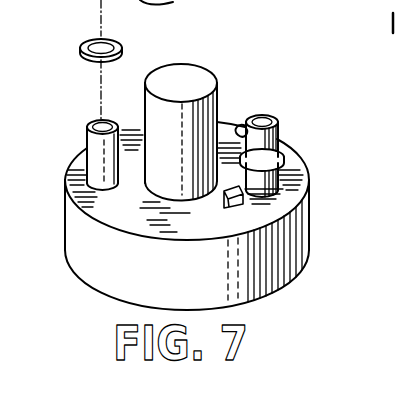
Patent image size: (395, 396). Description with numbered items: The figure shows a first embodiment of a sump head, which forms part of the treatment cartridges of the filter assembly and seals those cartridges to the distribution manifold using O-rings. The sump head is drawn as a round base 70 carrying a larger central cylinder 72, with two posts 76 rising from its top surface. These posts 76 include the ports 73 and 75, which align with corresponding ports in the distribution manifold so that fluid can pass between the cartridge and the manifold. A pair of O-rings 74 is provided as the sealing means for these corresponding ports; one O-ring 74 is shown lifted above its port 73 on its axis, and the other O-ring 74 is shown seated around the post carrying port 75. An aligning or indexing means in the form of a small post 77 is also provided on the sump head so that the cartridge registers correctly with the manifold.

The base 70 is at (274, 247).
The large tube 72 is at (181, 88).
The port 73 is at (87, 128).
The O-ring 74 is at (80, 47).
The port 75 is at (265, 118).
The post 76 is at (240, 125).
The post 77 is at (244, 198).